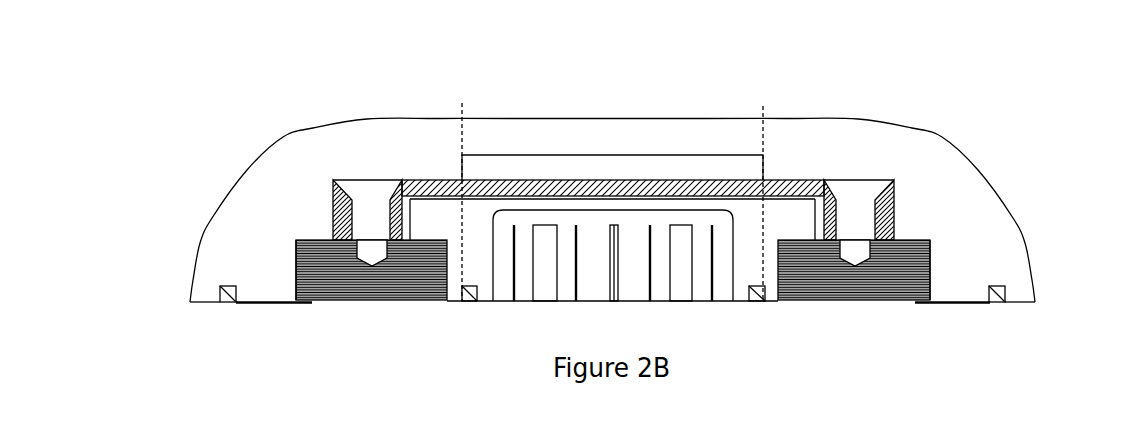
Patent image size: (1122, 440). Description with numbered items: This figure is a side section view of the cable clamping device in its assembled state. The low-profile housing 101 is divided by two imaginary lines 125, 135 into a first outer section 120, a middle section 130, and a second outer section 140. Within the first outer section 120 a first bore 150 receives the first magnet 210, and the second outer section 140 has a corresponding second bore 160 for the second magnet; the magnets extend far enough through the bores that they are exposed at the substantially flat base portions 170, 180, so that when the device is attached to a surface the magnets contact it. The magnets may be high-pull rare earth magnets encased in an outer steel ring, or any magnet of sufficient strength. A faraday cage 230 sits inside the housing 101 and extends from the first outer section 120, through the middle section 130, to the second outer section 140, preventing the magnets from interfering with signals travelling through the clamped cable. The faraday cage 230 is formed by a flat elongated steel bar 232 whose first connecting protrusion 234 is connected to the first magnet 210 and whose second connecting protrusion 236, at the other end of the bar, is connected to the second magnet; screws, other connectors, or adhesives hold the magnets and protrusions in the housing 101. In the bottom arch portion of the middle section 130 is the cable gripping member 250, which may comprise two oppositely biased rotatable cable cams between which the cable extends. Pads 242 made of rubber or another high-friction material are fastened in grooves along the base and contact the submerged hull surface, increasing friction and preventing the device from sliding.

The housing 101 is at (612, 202).
The first outer section 120 is at (273, 168).
The imaginary line 125 is at (462, 144).
The middle section 130 is at (698, 122).
The imaginary line 135 is at (763, 144).
The second outer section 140 is at (943, 157).
The first bore 150 is at (297, 264).
The second bore 160 is at (930, 263).
The substantially flat base portion 170 is at (207, 301).
The substantially flat base portion 180 is at (1025, 309).
The first magnet 210 is at (372, 300).
The faraday cage 230 is at (628, 126).
The flat elongated steel bar 232 is at (472, 185).
The first connecting protrusion 234 is at (333, 205).
The second connecting protrusion 236 is at (894, 198).
The pads 242 is at (226, 302).
The cable gripping member 250 is at (630, 302).